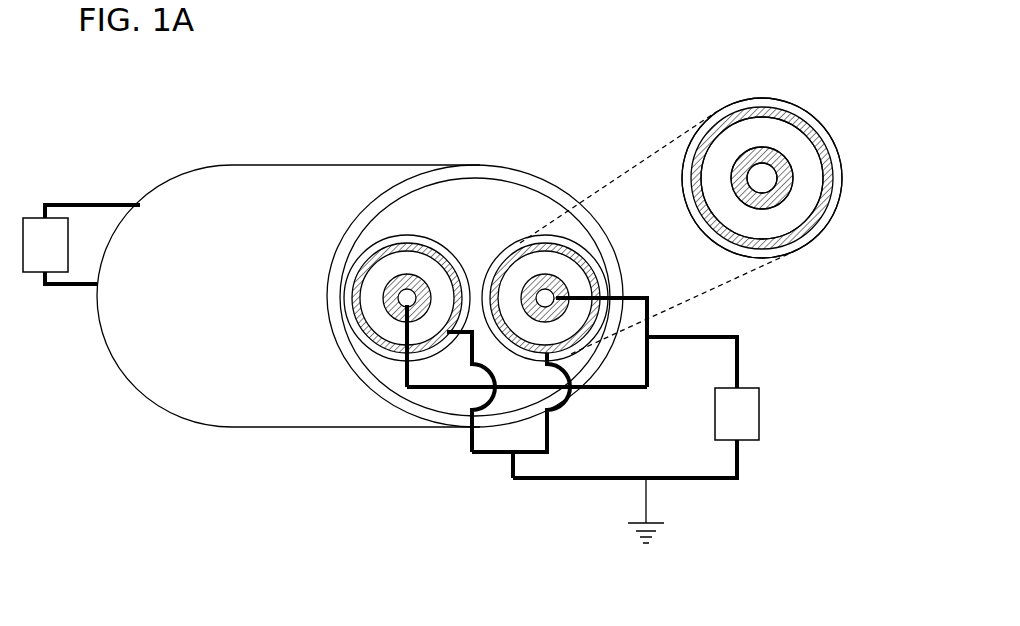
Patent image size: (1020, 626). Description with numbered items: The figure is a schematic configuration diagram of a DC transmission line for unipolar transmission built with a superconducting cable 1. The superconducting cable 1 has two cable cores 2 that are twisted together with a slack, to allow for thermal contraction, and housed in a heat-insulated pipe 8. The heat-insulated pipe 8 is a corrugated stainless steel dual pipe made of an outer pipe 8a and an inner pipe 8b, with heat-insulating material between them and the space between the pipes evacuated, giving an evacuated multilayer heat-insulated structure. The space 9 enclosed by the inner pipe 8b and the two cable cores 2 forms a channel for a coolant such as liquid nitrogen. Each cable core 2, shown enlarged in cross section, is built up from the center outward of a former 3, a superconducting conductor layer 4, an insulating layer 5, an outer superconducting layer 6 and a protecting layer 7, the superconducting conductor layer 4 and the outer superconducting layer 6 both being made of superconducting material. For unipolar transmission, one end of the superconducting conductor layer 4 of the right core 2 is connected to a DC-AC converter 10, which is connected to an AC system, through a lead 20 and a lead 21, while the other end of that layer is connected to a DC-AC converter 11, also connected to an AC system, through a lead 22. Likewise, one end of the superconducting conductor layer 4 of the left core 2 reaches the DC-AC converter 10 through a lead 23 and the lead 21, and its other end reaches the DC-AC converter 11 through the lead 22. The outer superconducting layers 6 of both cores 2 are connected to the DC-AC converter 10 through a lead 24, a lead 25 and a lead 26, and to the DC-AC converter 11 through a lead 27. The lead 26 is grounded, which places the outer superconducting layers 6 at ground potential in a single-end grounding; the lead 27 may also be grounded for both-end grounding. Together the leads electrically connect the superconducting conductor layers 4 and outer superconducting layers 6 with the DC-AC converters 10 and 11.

The superconducting cable 1 is at (318, 164).
The cable core 2 is at (430, 236).
The former 3 is at (770, 175).
The superconducting conductor layer 4 is at (388, 308).
The insulating layer 5 is at (793, 217).
The outer superconducting layer 6 is at (385, 358).
The protecting layer 7 is at (814, 117).
The heat-insulated pipe 8 is at (431, 412).
The outer pipe 8a is at (410, 419).
The inner pipe 8b is at (450, 418).
The space 9 is at (455, 198).
The DC-AC converter 10 is at (737, 414).
The DC-AC converter 11 is at (45, 245).
The lead 20 is at (633, 296).
The lead 21 is at (740, 368).
The lead 22 is at (97, 204).
The lead 23 is at (608, 390).
The lead 24 is at (550, 440).
The lead 25 is at (492, 455).
The lead 26 is at (683, 481).
The lead 27 is at (83, 287).